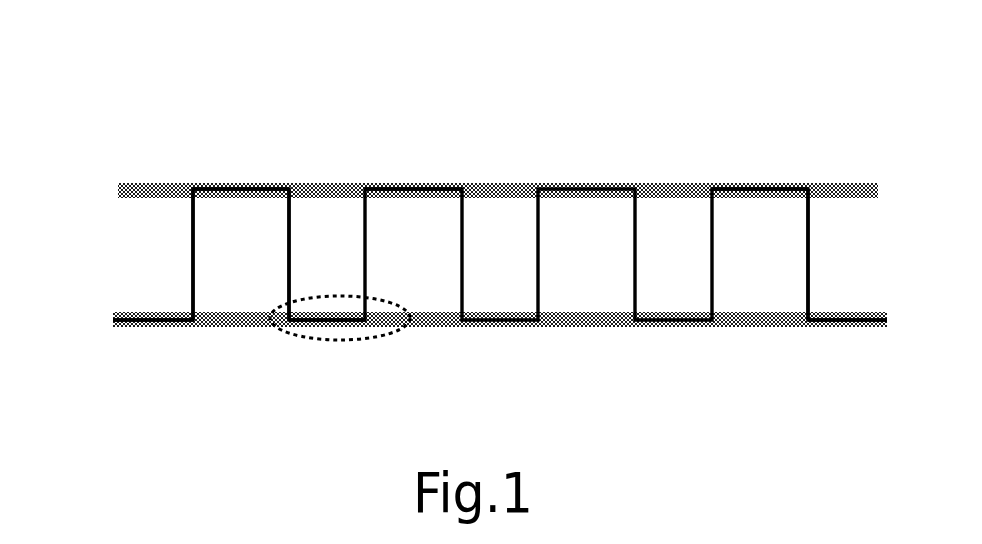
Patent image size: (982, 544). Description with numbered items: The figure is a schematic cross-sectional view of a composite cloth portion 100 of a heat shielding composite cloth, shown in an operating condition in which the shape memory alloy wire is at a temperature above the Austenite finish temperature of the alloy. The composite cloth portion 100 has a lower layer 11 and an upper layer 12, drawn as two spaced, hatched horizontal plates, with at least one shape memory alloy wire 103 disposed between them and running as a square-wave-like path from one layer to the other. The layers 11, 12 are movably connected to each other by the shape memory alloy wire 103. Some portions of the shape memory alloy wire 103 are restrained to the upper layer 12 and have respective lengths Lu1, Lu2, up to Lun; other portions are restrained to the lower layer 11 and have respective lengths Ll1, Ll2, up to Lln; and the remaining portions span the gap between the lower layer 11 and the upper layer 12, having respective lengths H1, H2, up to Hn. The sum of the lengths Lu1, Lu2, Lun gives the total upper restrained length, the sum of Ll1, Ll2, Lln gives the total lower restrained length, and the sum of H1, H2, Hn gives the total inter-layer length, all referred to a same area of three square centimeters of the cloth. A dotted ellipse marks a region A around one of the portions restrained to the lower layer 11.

The composite cloth portion 100 is at (140, 84).
The upper layer 12 is at (133, 183).
The lower layer 11 is at (592, 313).
The shape memory alloy wire 103 is at (530, 188).
The length of first wire portion restrained to the upper layer Lu1 is at (250, 188).
The length of second wire portion restrained to the upper layer Lu2 is at (408, 185).
The length of n-th wire portion restrained to the upper layer Lun is at (773, 183).
The length of first wire portion between the layers H1 is at (193, 257).
The length of second wire portion between the layers H2 is at (289, 230).
The length of n-th wire portion between the layers Hn is at (808, 264).
The length of first wire portion restrained to the lower layer Ll1 is at (122, 327).
The length of second wire portion restrained to the lower layer Ll2 is at (330, 322).
The length of n-th wire portion restrained to the lower layer Lln is at (830, 323).
The detail region A is at (340, 301).